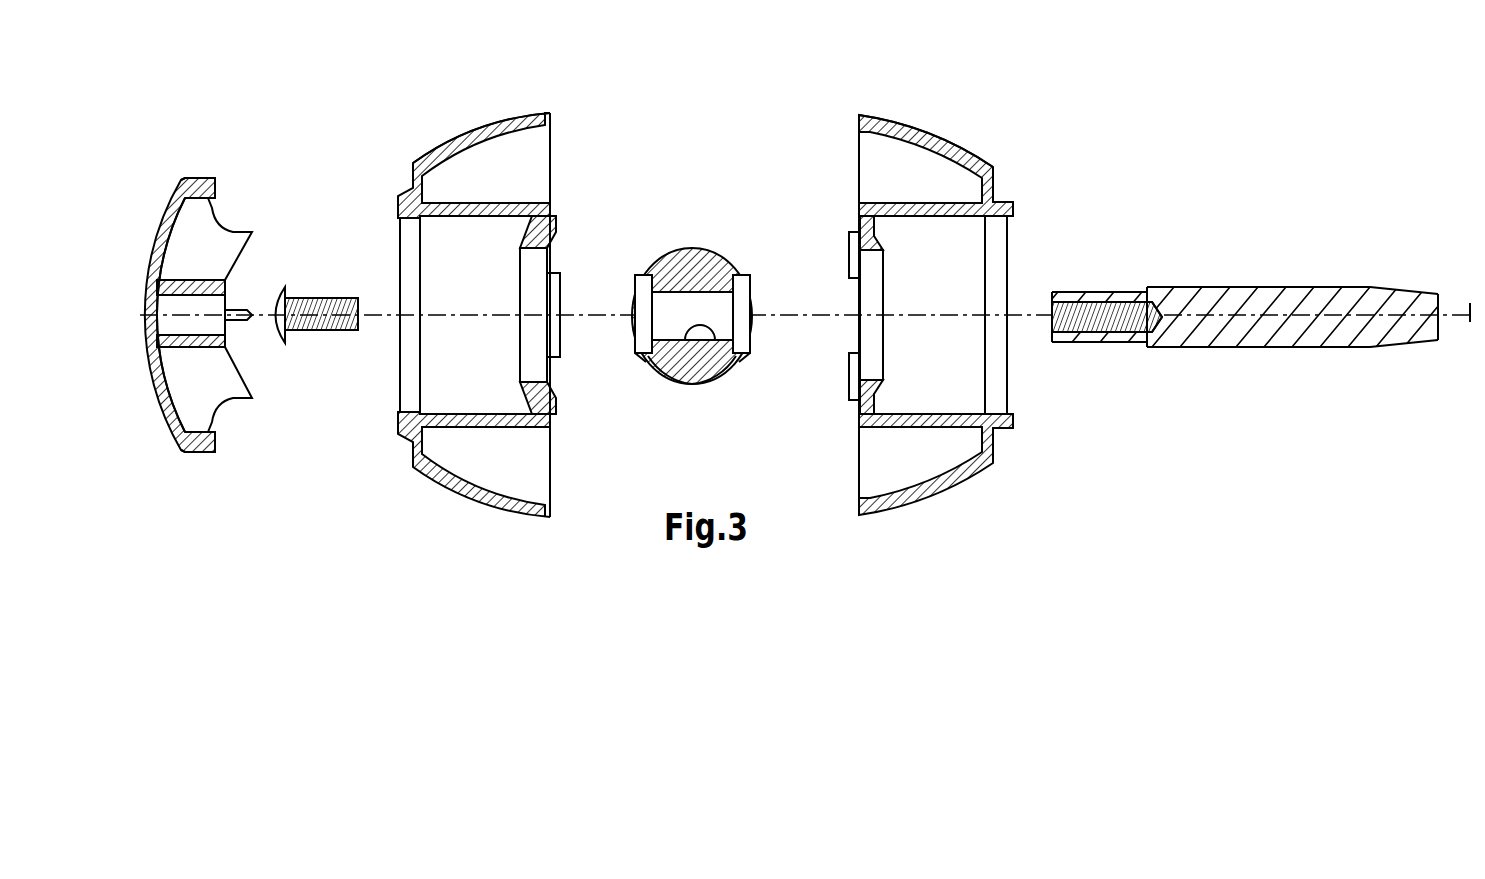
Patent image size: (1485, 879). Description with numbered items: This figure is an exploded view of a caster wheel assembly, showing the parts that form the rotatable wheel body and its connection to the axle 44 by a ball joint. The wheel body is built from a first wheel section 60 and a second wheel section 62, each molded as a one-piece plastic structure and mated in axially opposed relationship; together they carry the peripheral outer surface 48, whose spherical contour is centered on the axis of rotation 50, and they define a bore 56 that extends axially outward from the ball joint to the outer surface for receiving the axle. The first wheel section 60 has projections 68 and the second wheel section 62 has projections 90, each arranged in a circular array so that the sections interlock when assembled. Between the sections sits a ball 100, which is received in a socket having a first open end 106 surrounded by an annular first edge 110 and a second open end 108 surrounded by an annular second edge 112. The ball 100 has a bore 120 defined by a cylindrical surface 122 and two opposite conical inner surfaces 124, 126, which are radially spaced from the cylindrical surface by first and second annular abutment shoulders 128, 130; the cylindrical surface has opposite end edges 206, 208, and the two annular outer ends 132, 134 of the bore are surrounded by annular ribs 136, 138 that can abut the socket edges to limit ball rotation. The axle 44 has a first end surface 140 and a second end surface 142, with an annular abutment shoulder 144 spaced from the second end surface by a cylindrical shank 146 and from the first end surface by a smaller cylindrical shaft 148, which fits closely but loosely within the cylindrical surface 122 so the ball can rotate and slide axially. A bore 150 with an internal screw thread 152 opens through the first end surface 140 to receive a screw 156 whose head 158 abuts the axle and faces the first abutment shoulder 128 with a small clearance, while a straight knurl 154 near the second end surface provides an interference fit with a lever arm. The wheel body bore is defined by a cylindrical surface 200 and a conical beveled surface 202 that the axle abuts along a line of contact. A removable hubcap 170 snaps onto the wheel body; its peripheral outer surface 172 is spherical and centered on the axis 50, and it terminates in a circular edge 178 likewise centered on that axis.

The axle 44 is at (1207, 300).
The peripheral outer surface 48 is at (478, 120).
The axis of rotation 50 is at (1470, 312).
The bore 56 is at (962, 308).
The first wheel section 60 is at (505, 273).
The second wheel section 62 is at (948, 285).
The projections 68 is at (560, 280).
The projections 90 is at (849, 378).
The ball 100 is at (693, 314).
The first open end 106 is at (520, 283).
The second open end 108 is at (886, 270).
The first edge 110 is at (520, 341).
The second edge 112 is at (885, 334).
The bore 120 is at (695, 296).
The cylindrical surface 122 is at (716, 341).
The conical inner surface 124 is at (652, 361).
The conical inner surface 126 is at (737, 361).
The first annular abutment shoulder 128 is at (645, 351).
The second annular abutment shoulder 130 is at (752, 349).
The annular outer end 132 is at (640, 278).
The annular outer end 134 is at (752, 280).
The annular rib 136 is at (633, 305).
The annular rib 138 is at (752, 305).
The first end surface 140 is at (1052, 298).
The second end surface 142 is at (1440, 345).
The annular abutment shoulder 144 is at (1145, 290).
The cylindrical shank 146 is at (1307, 288).
The cylindrical shaft 148 is at (1120, 292).
The bore 150 is at (1052, 312).
The internal screw thread 152 is at (1052, 333).
The straight knurl 154 is at (1395, 290).
The screw 156 is at (318, 286).
The head 158 is at (280, 300).
The hubcap 170 is at (195, 283).
The peripheral outer surface 172 is at (178, 195).
The circular edge 178 is at (205, 178).
The cylindrical surface 200 is at (1005, 225).
The conical beveled surface 202 is at (1010, 205).
The end edge 206 is at (635, 331).
The end edge 208 is at (755, 333).